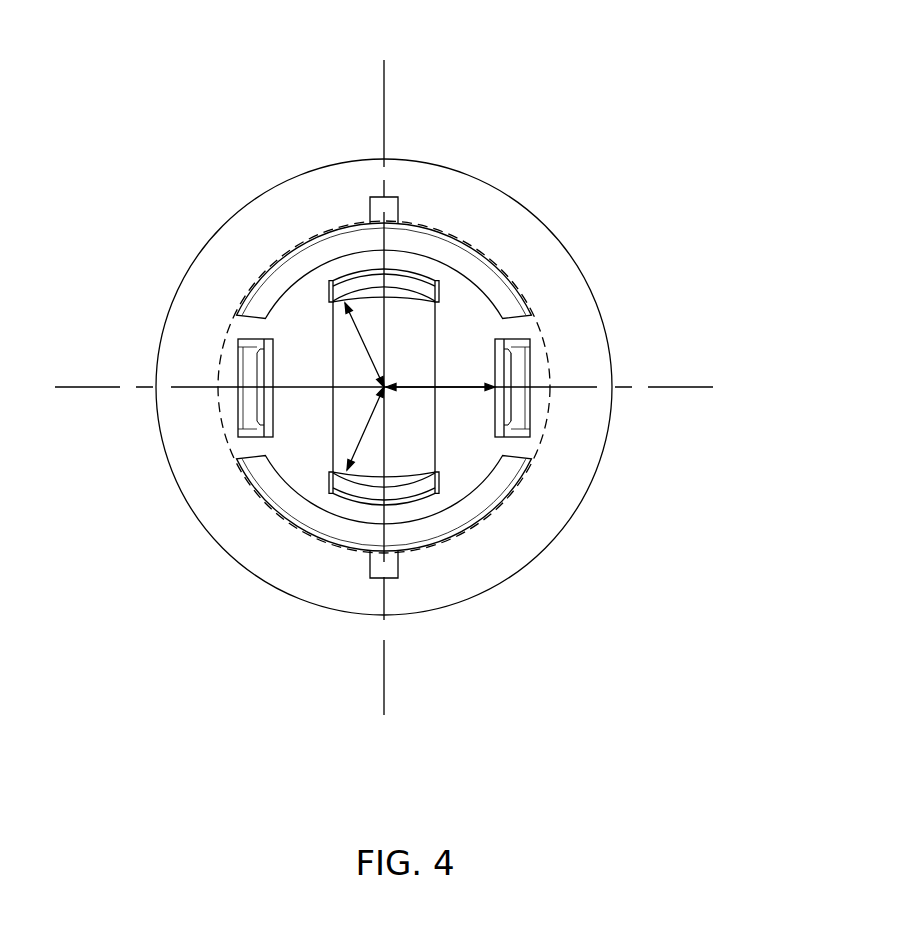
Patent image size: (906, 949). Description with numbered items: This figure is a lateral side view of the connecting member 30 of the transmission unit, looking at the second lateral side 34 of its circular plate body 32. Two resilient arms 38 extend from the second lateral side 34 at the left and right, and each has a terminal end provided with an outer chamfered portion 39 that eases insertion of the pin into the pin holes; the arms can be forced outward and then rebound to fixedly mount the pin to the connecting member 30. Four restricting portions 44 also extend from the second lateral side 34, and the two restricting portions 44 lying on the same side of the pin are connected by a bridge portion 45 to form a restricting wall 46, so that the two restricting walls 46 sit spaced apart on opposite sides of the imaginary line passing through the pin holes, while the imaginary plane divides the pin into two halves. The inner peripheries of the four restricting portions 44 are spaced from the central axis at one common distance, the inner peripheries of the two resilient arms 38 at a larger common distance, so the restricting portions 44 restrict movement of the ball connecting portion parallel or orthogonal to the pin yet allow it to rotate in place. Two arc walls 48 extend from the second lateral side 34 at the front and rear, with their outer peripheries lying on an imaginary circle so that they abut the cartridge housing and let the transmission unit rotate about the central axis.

The connecting member 30 is at (409, 377).
The circular plate body 32 is at (560, 288).
The second lateral side 34 is at (398, 387).
The resilient arm 38 is at (248, 430).
The outer chamfered portion 39 is at (507, 377).
The restricting portion 44 is at (320, 287).
The bridge portion 45 is at (362, 287).
The restricting wall 46 is at (326, 385).
The arc wall 48 is at (458, 255).